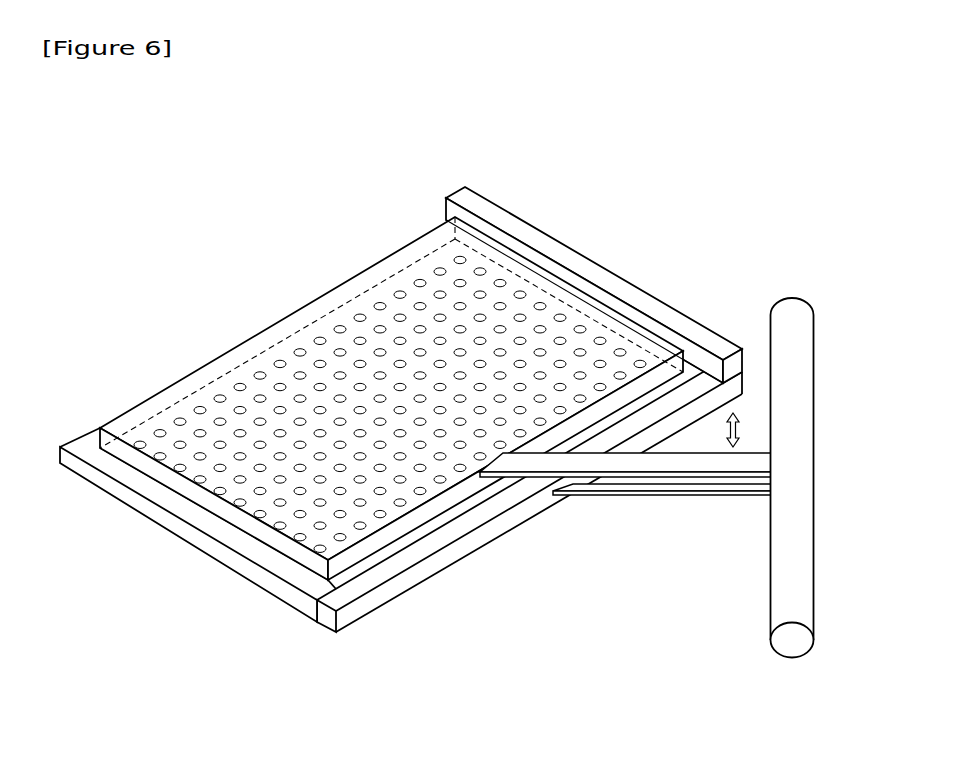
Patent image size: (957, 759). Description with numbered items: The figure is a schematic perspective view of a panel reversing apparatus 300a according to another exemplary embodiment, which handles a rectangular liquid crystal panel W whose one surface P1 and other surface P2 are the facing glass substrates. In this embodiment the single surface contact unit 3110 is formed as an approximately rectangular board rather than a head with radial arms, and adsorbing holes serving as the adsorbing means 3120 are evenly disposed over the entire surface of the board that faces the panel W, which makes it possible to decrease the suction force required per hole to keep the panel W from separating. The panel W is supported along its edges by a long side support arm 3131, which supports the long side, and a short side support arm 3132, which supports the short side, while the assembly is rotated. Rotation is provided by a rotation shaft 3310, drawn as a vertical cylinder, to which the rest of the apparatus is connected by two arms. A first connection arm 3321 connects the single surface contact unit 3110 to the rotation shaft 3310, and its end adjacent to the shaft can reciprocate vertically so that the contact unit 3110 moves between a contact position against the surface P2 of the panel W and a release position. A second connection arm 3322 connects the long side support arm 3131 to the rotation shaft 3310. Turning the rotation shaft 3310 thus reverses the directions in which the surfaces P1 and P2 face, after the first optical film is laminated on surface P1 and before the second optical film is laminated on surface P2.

The panel reversing apparatus 300a is at (445, 459).
The single surface contact unit 3110 is at (345, 293).
The adsorbing means 3120 is at (262, 372).
The long side support arm 3131 is at (417, 573).
The short side support arm 3132 is at (610, 278).
The rotation shaft 3310 is at (803, 421).
The first connection arm 3321 is at (757, 460).
The second connection arm 3322 is at (648, 490).
The panel W is at (60, 465).
The one surface of the panel P1 is at (105, 487).
The other surface of the panel P2 is at (83, 442).